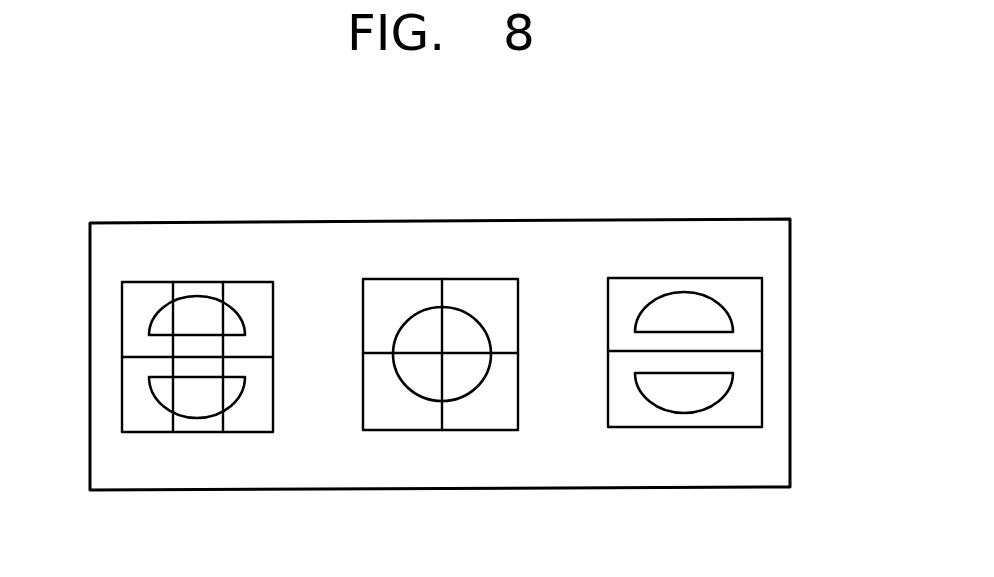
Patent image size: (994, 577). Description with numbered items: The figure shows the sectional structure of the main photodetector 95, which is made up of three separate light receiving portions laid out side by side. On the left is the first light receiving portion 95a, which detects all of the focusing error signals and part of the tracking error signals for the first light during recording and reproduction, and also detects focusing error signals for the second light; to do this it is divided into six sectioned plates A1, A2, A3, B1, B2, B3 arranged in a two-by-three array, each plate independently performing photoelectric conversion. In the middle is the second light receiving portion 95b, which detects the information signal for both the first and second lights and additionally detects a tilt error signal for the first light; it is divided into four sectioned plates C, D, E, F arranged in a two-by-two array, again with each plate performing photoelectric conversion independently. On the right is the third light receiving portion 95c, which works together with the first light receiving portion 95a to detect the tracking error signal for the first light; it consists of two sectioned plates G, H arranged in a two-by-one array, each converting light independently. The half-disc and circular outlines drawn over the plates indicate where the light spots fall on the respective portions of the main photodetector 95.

The main photodetector 95 is at (730, 200).
The first light receiving portion 95a is at (211, 386).
The second light receiving portion 95b is at (454, 410).
The third light receiving portion 95c is at (697, 408).
The sectioned plate A1 is at (141, 299).
The sectioned plate A2 is at (198, 288).
The sectioned plate A3 is at (253, 299).
The sectioned plate B1 is at (141, 414).
The sectioned plate B2 is at (197, 427).
The sectioned plate B3 is at (253, 414).
The sectioned plate C is at (378, 293).
The sectioned plate D is at (501, 293).
The sectioned plate E is at (501, 413).
The sectioned plate F is at (378, 413).
The sectioned plate G is at (622, 292).
The sectioned plate H is at (622, 407).